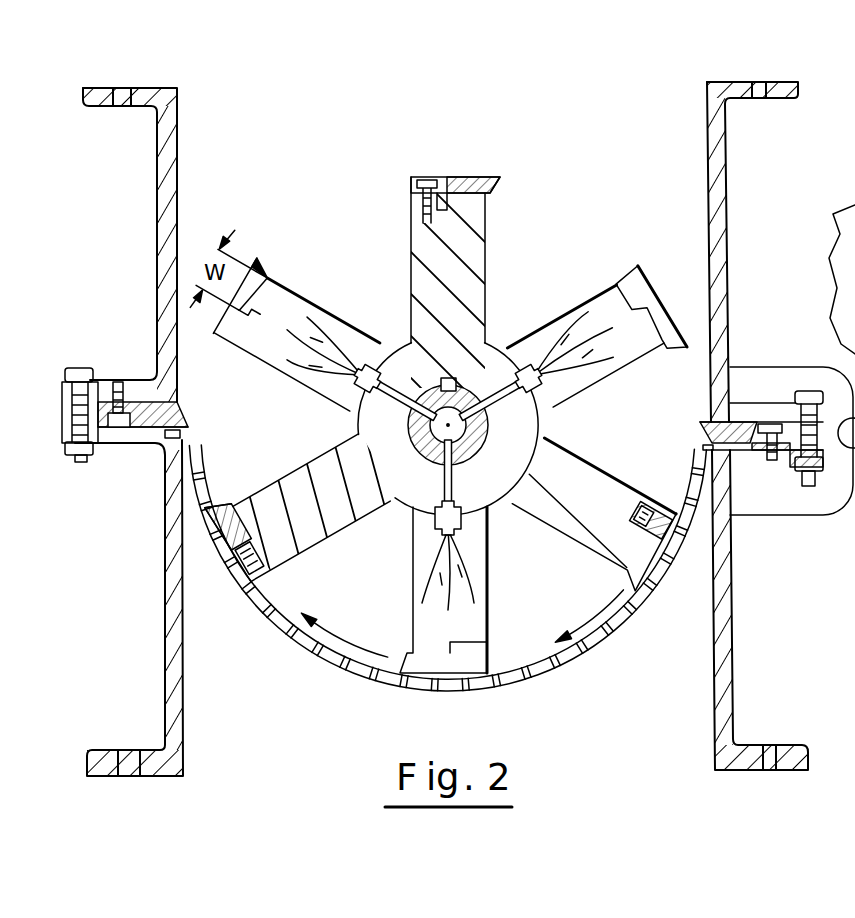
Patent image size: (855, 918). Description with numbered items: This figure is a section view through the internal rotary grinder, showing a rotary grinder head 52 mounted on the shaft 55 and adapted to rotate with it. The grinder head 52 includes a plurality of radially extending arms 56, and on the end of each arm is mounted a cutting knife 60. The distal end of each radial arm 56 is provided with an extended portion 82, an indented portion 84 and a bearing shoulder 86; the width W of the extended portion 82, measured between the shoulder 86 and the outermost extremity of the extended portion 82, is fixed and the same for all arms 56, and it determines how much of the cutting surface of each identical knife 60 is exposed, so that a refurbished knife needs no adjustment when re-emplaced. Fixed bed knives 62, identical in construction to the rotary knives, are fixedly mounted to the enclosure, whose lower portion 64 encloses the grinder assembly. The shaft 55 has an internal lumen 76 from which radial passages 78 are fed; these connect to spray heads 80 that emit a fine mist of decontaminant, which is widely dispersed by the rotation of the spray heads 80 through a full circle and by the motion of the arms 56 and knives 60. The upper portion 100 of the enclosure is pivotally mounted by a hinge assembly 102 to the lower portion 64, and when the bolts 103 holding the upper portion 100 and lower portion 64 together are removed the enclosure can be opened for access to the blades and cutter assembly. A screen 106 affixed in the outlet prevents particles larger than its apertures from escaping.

The upper portion of enclosure 100 is at (172, 127).
The rotary grinder head 52 is at (349, 208).
The cutting knife 60 is at (497, 178).
The radially extending arm 56 is at (483, 263).
The extended portion 82 is at (270, 284).
The bearing shoulder 86 is at (290, 302).
The spray head 80 is at (363, 368).
The radial passage 78 is at (478, 372).
The indented portion 84 is at (262, 356).
The fixed bed knife 62 is at (185, 412).
The bolt 103 is at (85, 366).
The hinge assembly 102 is at (807, 505).
The shaft 55 is at (387, 508).
The internal lumen 76 is at (515, 490).
The screen 106 is at (627, 622).
The lower portion of enclosure 64 is at (732, 622).